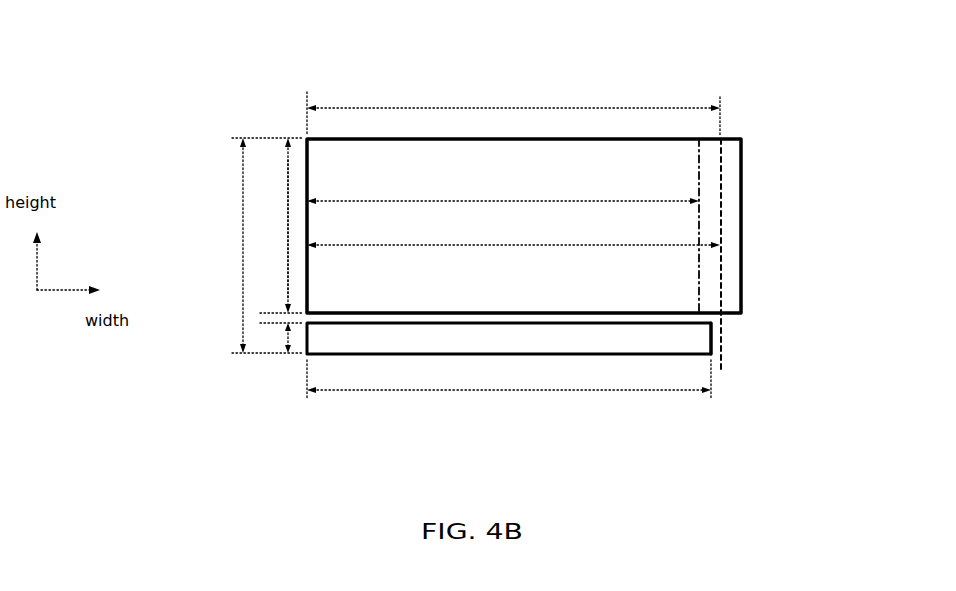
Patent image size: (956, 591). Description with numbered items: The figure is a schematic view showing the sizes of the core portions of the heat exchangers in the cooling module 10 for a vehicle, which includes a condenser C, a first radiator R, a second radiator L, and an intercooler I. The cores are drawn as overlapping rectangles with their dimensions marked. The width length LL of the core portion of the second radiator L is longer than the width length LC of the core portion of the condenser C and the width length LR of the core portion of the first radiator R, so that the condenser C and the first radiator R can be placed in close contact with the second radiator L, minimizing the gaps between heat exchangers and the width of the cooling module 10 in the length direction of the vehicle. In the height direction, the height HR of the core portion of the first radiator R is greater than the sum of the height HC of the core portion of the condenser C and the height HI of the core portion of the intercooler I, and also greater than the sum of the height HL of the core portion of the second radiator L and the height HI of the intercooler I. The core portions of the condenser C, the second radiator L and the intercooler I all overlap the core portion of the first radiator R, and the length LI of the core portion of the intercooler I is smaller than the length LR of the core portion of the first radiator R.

The cooling module 10 is at (736, 78).
The second radiator L is at (750, 141).
The condenser C is at (701, 176).
The first radiator R is at (723, 331).
The intercooler I is at (722, 371).
The width length of core portion of first radiator LR is at (513, 106).
The width length of core portion of condenser LC is at (503, 186).
The width length of core portion of second radiator LL is at (513, 232).
The length of core portion of intercooler LI is at (509, 380).
The height of core portion of first radiator HR is at (256, 245).
The height of core portion of condenser HC is at (280, 225).
The height of core portion of second radiator HL is at (272, 230).
The height of core portion of intercooler HI is at (280, 338).